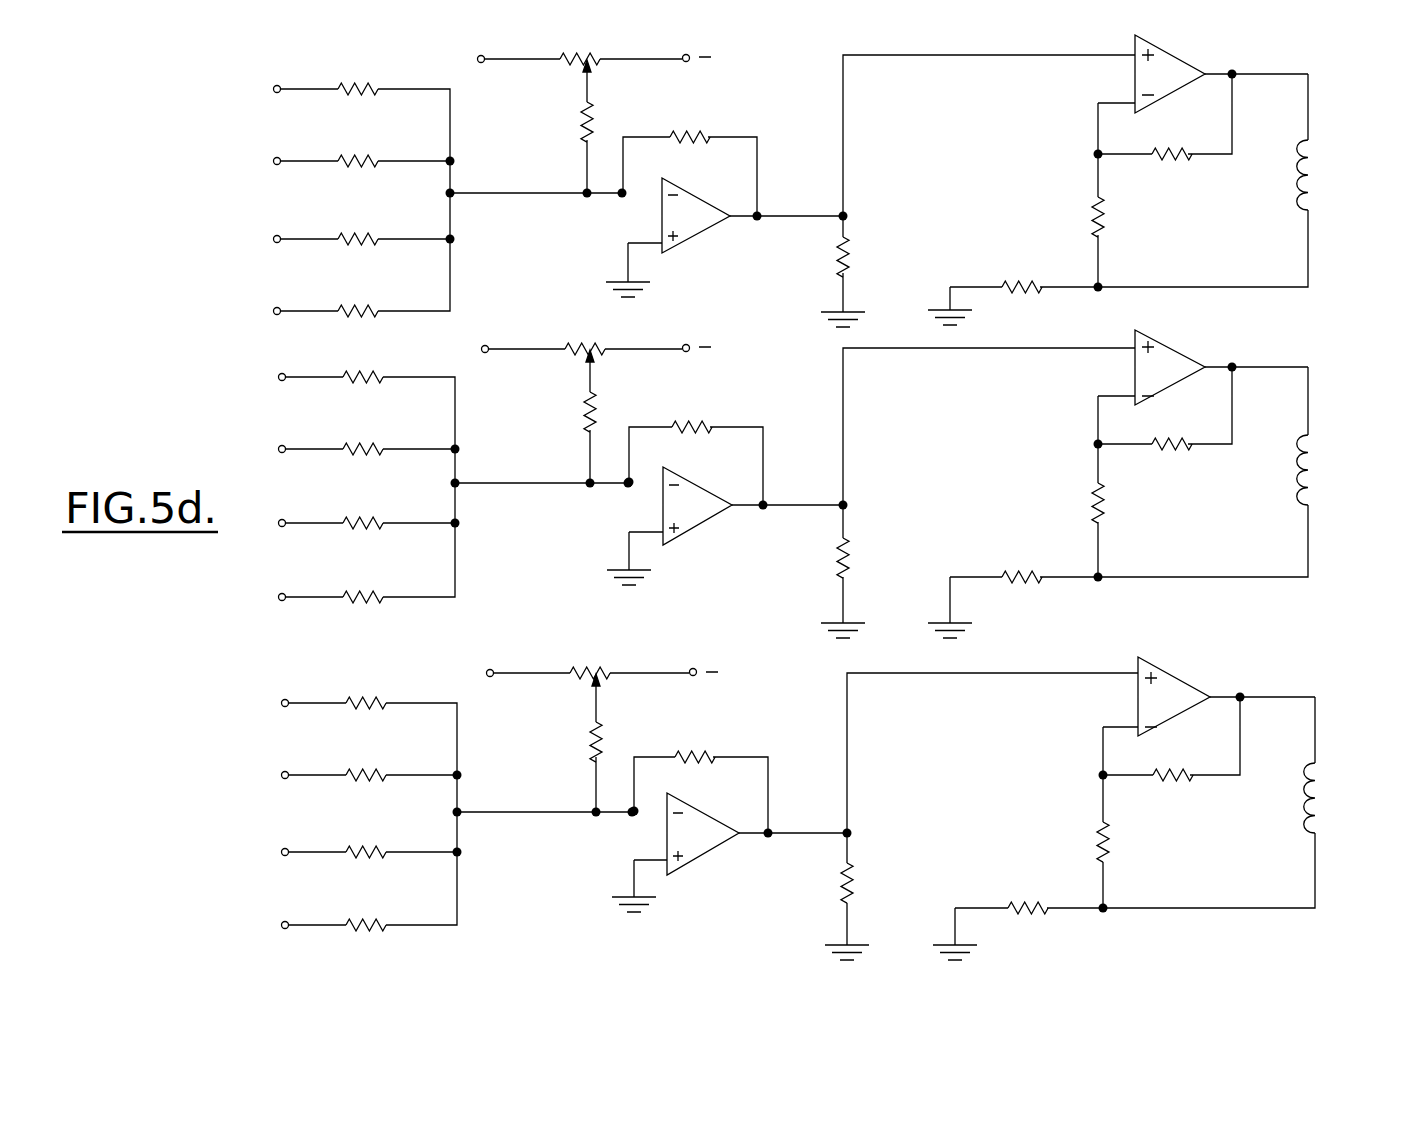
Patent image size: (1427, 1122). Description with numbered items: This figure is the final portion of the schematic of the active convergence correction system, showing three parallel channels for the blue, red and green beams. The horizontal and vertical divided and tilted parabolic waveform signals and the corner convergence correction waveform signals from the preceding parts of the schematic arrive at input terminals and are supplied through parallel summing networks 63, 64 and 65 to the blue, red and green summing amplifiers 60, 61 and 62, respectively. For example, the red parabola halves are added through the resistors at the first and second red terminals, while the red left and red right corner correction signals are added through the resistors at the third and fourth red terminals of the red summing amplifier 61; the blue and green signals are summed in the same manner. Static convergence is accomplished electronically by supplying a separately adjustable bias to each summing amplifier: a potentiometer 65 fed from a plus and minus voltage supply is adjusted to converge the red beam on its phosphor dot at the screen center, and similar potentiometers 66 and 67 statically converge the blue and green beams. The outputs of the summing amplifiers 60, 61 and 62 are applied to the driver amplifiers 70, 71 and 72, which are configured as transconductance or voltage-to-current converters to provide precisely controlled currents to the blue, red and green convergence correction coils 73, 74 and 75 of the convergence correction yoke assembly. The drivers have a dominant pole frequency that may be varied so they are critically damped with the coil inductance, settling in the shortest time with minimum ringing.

The blue summing amplifier 60 is at (698, 237).
The red summing amplifier 61 is at (699, 527).
The green summing amplifier 62 is at (705, 855).
The parallel summing network 63 is at (450, 138).
The parallel summing network 64 is at (455, 422).
The parallel summing network / potentiometer 65 is at (571, 360).
The potentiometer 66 is at (566, 65).
The potentiometer 67 is at (580, 677).
The driver amplifier 70 is at (1053, 167).
The driver amplifier 71 is at (1053, 459).
The driver amplifier 72 is at (1062, 789).
The blue convergence correction coil 73 is at (1318, 148).
The red convergence correction coil 74 is at (1318, 441).
The green convergence correction coil 75 is at (1323, 772).